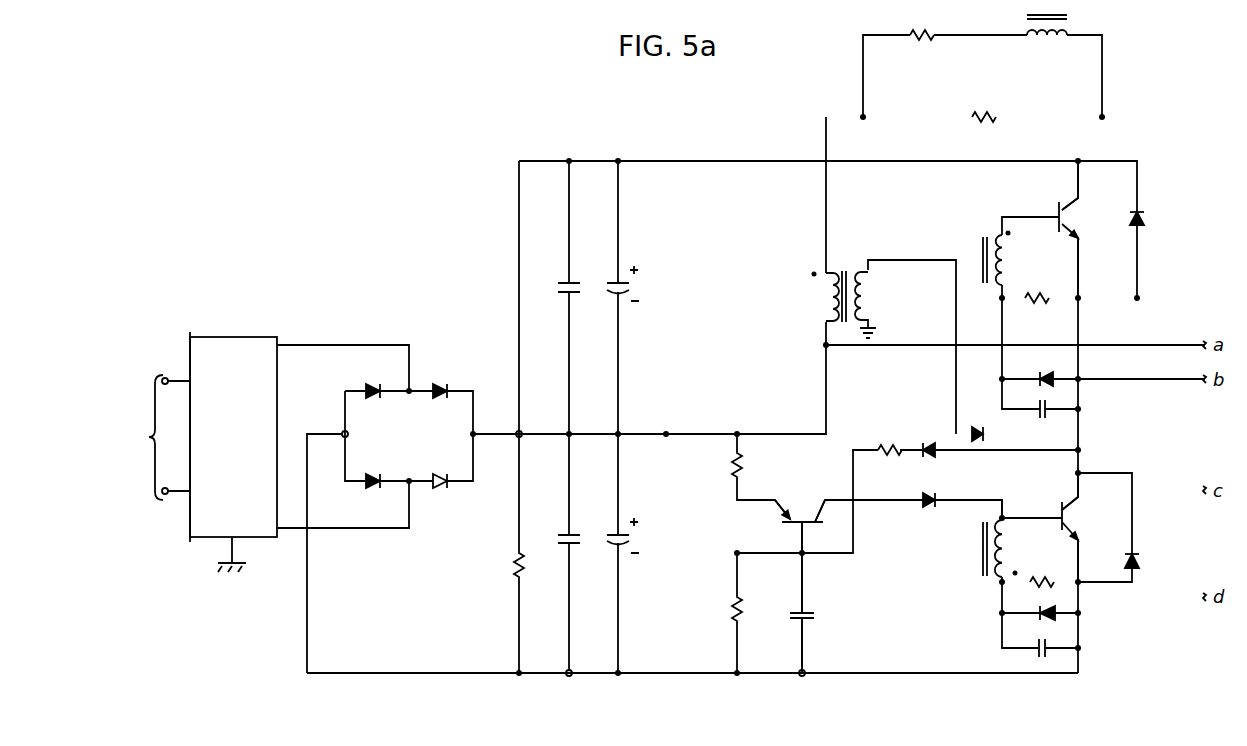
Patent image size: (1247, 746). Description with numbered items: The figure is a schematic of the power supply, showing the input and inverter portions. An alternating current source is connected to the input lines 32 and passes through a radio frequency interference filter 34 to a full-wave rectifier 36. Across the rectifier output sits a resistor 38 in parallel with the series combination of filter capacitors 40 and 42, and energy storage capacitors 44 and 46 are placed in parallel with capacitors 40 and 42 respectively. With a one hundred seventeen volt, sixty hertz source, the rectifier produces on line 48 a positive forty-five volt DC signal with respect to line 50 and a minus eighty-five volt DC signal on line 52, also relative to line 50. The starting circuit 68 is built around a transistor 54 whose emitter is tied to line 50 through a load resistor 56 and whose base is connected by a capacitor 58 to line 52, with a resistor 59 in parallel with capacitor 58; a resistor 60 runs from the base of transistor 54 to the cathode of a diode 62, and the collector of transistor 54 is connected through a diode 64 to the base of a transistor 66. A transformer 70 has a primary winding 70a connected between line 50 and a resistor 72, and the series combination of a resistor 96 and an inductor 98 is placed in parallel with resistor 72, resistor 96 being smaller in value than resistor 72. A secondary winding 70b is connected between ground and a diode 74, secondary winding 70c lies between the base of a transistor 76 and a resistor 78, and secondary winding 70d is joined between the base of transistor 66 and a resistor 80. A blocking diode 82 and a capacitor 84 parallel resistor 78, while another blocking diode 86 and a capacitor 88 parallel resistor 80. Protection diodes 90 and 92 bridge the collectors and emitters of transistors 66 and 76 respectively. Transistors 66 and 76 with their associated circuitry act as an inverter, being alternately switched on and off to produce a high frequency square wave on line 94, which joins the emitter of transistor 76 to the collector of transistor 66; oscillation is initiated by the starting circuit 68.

The input lines 32 is at (167, 385).
The radio frequency interference filter 34 is at (247, 337).
The full-wave rectifier 36 is at (425, 365).
The resistor 38 is at (525, 578).
The filter capacitor 40 is at (578, 293).
The filter capacitor 42 is at (578, 545).
The energy storage capacitor 44 is at (618, 282).
The energy storage capacitor 46 is at (618, 534).
The line 48 is at (642, 160).
The line 50 is at (645, 434).
The line 52 is at (595, 675).
The transistor 54 is at (808, 508).
The load resistor 56 is at (731, 471).
The capacitor 58 is at (813, 618).
The resistor 59 is at (730, 618).
The resistor 60 is at (889, 447).
The diode 62 is at (935, 458).
The diode 64 is at (928, 508).
The transistor 66 is at (1068, 507).
The starting circuit 68 is at (757, 546).
The transformer 70 is at (847, 275).
The primary winding 70a is at (823, 300).
The secondary winding 70b is at (864, 297).
The secondary winding 70c is at (1005, 259).
The secondary winding 70d is at (1007, 549).
The resistor 72 is at (995, 118).
The diode 74 is at (979, 429).
The transistor 76 is at (1070, 216).
The resistor 78 is at (1056, 283).
The resistor 80 is at (1046, 579).
The blocking diode 82 is at (1046, 373).
The capacitor 84 is at (1035, 410).
The blocking diode 86 is at (1040, 610).
The capacitor 88 is at (1037, 646).
The protection diode 90 is at (1140, 566).
The protection diode 92 is at (1140, 224).
The line 94 is at (1110, 381).
The resistor 96 is at (935, 35).
The inductor 98 is at (1053, 37).